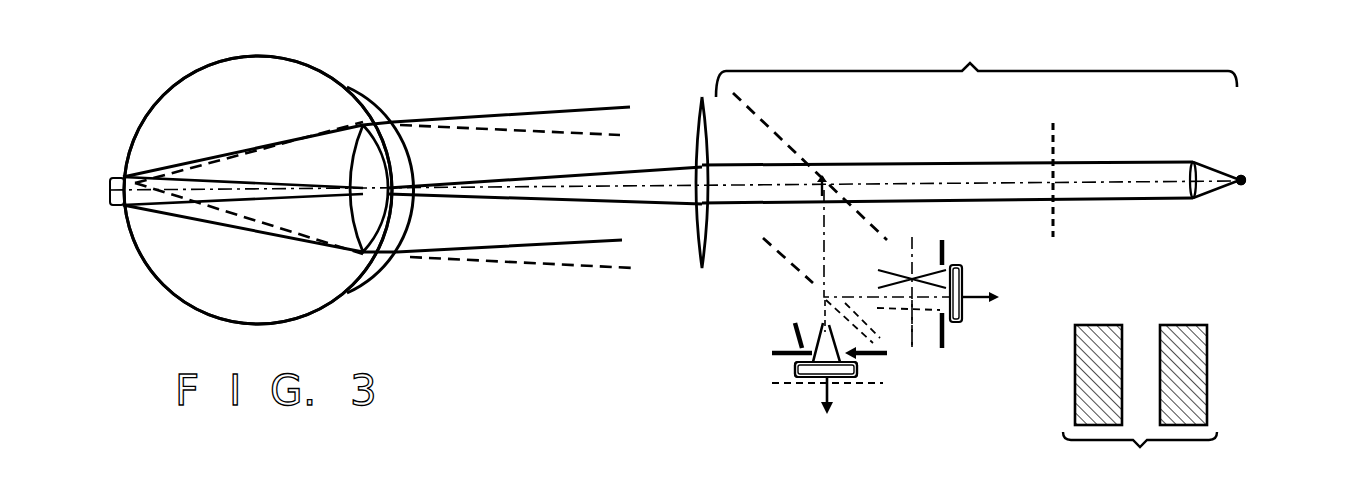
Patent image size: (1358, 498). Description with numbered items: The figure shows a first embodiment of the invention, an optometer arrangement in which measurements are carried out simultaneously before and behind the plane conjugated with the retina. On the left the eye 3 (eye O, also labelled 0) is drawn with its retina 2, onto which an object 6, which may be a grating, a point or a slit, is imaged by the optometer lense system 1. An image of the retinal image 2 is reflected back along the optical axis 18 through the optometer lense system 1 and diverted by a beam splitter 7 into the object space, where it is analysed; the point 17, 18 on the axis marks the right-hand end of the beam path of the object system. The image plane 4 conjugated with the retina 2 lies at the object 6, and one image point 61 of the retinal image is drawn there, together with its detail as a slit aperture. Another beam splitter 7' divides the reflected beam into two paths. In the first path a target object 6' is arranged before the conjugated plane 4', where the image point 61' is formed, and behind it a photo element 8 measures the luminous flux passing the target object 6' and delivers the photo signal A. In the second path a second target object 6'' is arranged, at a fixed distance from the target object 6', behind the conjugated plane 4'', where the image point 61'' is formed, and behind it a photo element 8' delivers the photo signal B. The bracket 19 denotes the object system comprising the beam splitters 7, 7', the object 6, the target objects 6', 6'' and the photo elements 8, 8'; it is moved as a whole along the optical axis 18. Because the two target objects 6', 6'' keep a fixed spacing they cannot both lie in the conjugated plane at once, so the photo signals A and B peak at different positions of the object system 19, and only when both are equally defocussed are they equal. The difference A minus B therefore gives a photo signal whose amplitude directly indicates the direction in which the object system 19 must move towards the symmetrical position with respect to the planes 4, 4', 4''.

The eye 0 is at (342, 80).
The optometer lense system 1 is at (700, 108).
The retina 2 is at (110, 194).
The eye 3 is at (136, 118).
The image plane 4 is at (1025, 166).
The object 6 is at (1135, 290).
The beam splitter 7 is at (810, 163).
The another beam splitter 7' is at (840, 290).
The photo element 8 is at (826, 409).
The photo element 8' is at (987, 308).
The object system 19 is at (976, 66).
The image point 61 is at (1133, 304).
The image point 61' is at (861, 416).
The image point 61'' is at (961, 287).
The conjugated plane 4' is at (791, 404).
The conjugated plane 4'' is at (928, 355).
The target object 6' is at (791, 352).
The second target object 6'' is at (972, 313).
The focus point of light source 17 is at (1248, 180).
The optical axis 18 is at (1287, 158).
The photo signal A is at (818, 393).
The photo signal B is at (978, 291).